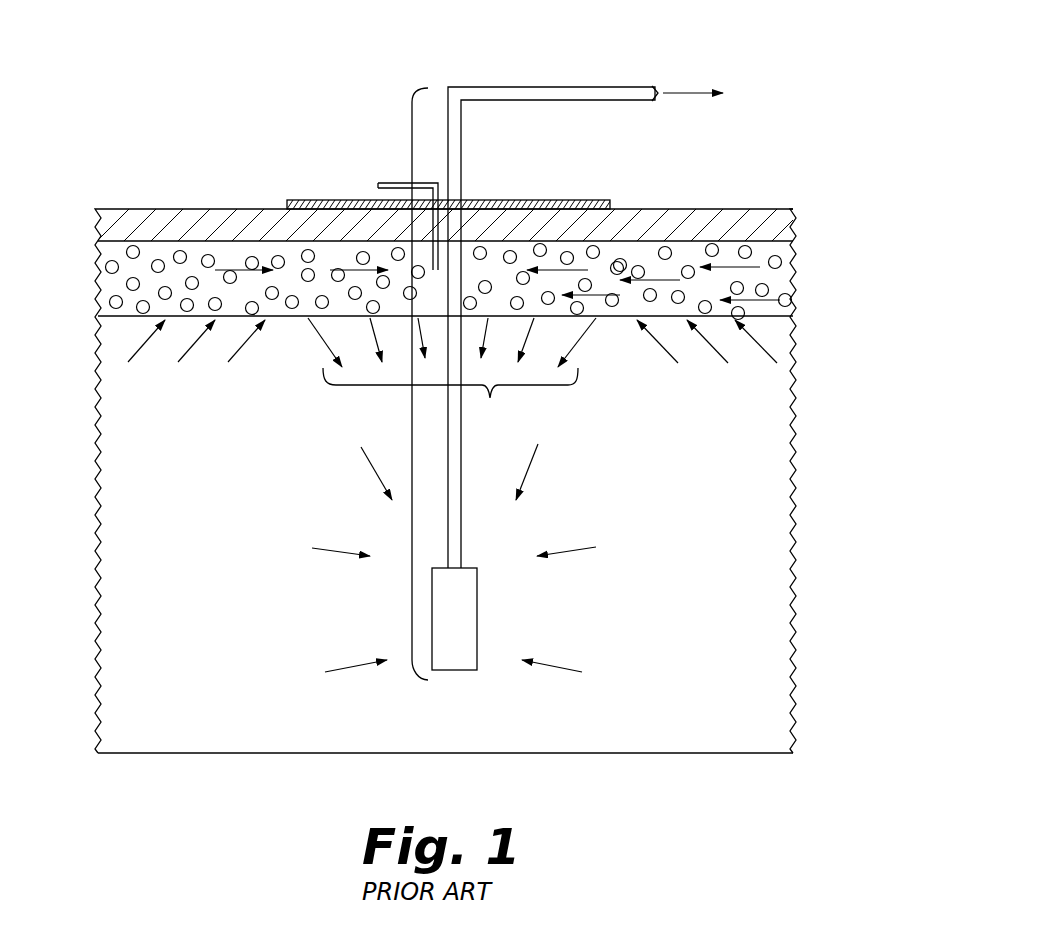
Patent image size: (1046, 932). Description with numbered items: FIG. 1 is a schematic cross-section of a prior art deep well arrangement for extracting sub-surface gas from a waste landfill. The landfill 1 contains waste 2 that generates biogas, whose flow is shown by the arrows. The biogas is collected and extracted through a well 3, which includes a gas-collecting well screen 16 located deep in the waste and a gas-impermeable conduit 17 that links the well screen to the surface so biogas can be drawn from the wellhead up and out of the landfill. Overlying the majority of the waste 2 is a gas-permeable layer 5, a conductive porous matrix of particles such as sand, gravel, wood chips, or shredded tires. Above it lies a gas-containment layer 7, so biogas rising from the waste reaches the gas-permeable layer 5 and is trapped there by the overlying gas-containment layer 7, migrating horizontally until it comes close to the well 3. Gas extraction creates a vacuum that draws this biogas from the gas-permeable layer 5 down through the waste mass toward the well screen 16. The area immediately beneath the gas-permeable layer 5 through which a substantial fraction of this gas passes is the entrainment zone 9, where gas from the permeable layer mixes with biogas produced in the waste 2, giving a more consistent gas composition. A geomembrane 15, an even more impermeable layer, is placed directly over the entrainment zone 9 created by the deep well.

The landfill 1 is at (826, 268).
The waste 2 is at (194, 515).
The well 3 is at (412, 440).
The gas-permeable layer 5 is at (108, 288).
The gas-containment layer 7 is at (676, 220).
The entrainment zone 9 is at (489, 327).
The geomembrane 15 is at (543, 200).
The well screen 16 is at (478, 617).
The gas-impermeable conduit 17 is at (600, 86).